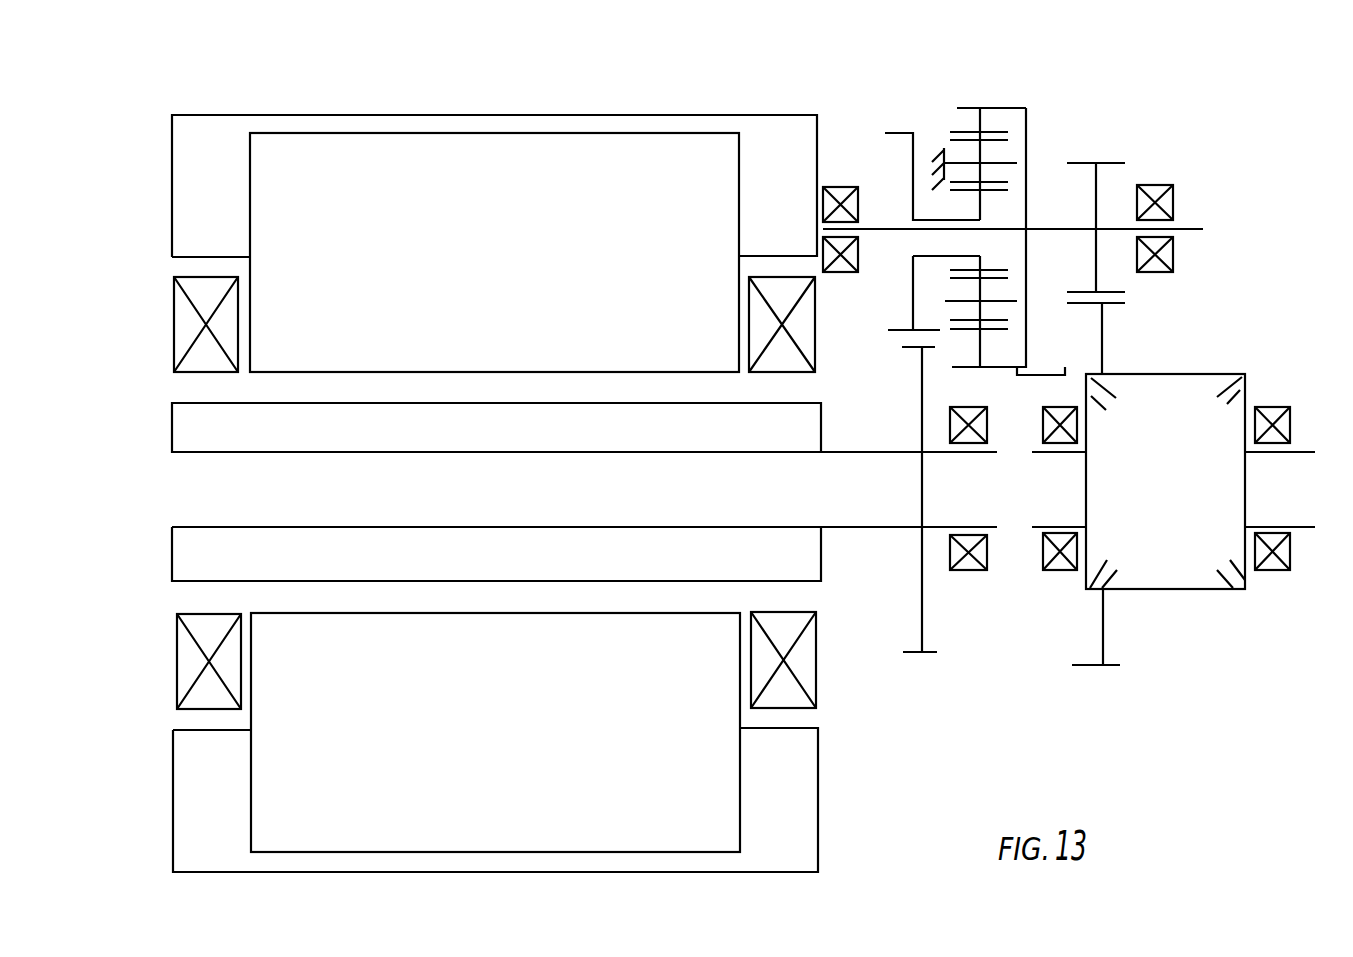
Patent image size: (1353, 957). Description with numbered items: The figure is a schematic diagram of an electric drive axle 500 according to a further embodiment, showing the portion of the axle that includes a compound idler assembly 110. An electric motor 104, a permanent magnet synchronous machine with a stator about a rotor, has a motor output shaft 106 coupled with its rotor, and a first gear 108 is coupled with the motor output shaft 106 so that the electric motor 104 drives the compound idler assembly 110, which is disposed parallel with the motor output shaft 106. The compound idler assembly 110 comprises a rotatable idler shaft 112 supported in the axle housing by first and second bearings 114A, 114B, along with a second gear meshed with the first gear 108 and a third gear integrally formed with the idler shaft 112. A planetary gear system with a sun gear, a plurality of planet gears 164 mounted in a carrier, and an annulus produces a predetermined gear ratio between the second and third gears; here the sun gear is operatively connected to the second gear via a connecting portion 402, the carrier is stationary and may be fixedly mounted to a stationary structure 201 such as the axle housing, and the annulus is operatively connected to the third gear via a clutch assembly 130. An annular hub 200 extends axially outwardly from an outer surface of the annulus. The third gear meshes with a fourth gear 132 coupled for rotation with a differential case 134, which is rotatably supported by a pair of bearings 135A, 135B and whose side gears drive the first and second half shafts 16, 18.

The electric drive axle 500 is at (122, 126).
The electric motor 104 is at (292, 115).
The motor output shaft 106 is at (852, 452).
The first gear 108 is at (901, 347).
The compound idler assembly 110 is at (853, 96).
The idler shaft 112 is at (880, 228).
The first bearing 114A is at (838, 186).
The second bearing 114B is at (1165, 185).
The clutch assembly 130 is at (1040, 375).
The fourth gear 132 is at (1117, 304).
The differential case 134 is at (1210, 370).
The bearing 135A is at (1060, 571).
The bearing 135B is at (1268, 571).
The first half shaft 16 is at (1040, 526).
The second half shaft 18 is at (1312, 527).
The planet gears 164 is at (950, 131).
The annular hub 200 is at (1026, 148).
The stationary structure 201 is at (943, 153).
The connecting portion 402 is at (962, 221).